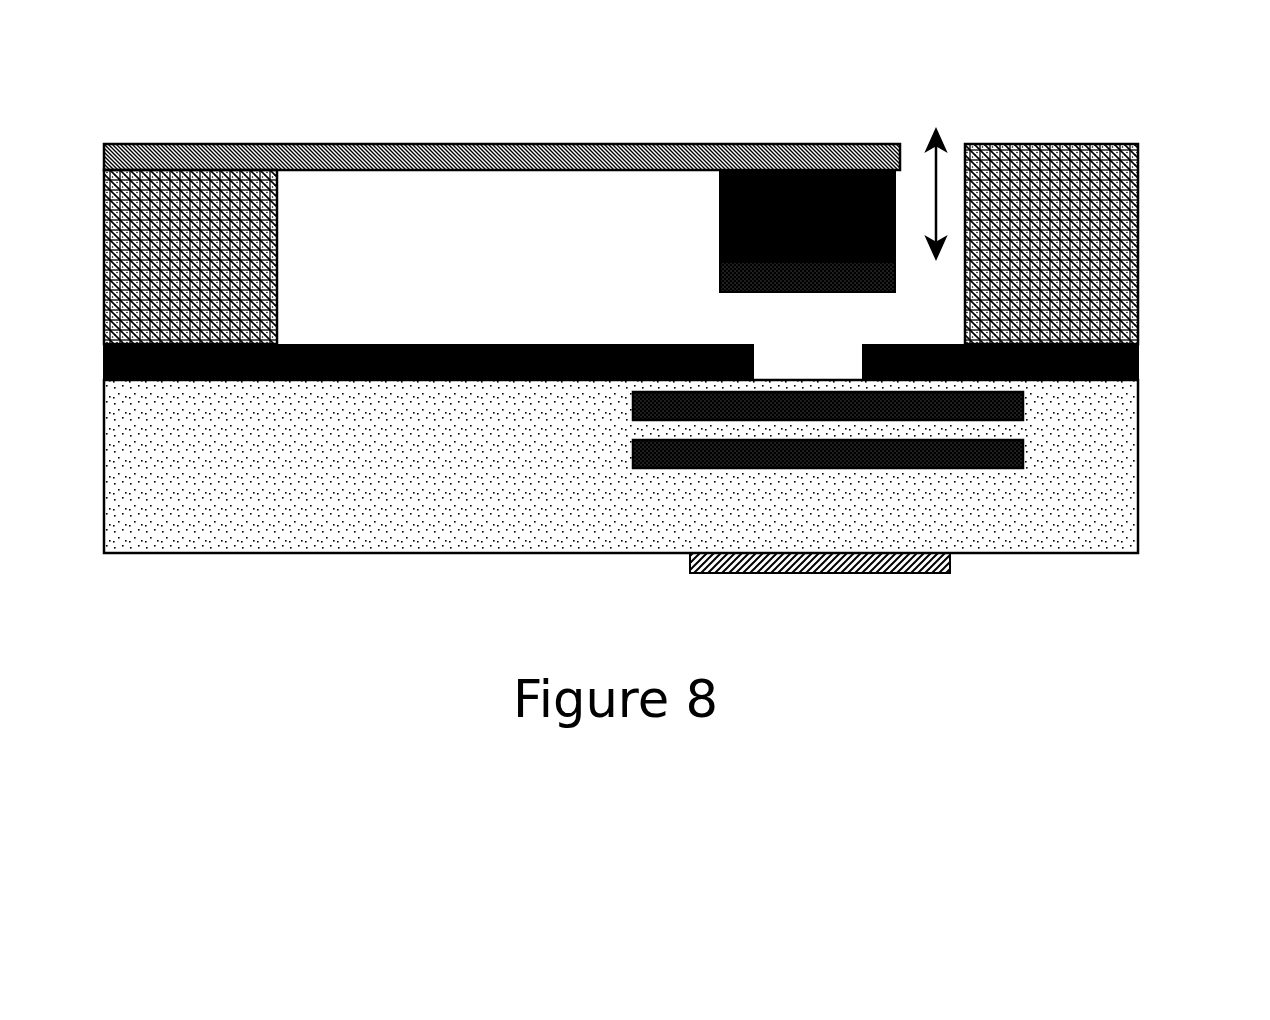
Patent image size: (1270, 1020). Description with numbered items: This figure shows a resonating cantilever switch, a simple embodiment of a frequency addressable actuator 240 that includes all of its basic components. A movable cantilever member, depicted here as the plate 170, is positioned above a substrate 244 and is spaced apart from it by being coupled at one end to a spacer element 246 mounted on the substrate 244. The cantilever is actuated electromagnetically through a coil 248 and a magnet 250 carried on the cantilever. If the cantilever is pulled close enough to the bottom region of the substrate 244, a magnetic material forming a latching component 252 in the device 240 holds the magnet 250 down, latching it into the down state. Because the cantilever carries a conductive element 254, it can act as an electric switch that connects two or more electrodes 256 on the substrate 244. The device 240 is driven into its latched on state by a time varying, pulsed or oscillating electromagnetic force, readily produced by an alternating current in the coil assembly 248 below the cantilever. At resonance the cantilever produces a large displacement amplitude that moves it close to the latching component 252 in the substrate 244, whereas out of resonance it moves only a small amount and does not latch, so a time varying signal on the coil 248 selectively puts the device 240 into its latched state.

The frequency addressable actuator 240 is at (162, 57).
The movable plate 170 is at (502, 144).
The spacer element 246 is at (621, 244).
The magnet 250 is at (705, 217).
The conductive element 254 is at (705, 275).
The electrodes 256 is at (537, 341).
The coil 248 is at (1023, 407).
The substrate 244 is at (1138, 505).
The latching component 252 is at (822, 573).